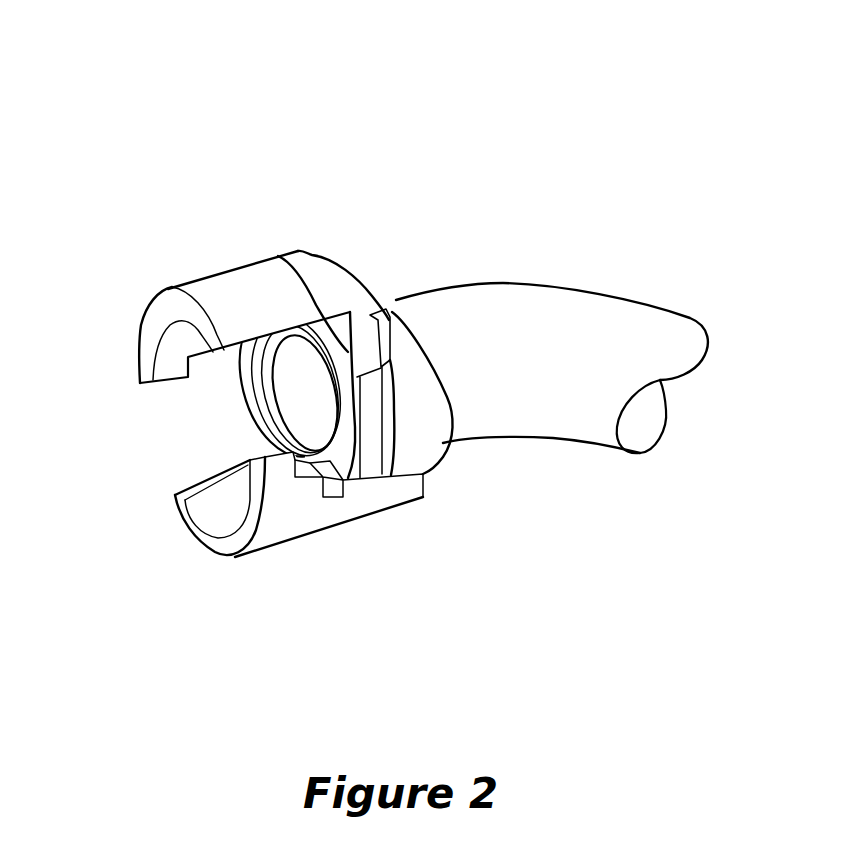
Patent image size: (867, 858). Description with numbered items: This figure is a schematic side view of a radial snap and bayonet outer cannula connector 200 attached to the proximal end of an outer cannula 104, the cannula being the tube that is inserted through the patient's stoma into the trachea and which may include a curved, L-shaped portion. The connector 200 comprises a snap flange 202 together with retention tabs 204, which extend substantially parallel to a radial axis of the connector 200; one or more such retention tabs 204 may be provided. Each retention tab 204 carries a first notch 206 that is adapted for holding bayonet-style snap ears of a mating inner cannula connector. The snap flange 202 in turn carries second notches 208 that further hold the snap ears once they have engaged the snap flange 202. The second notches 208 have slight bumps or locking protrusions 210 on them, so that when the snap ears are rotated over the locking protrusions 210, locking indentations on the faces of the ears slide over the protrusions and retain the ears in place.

The radial snap and bayonet outer cannula connector 200 is at (382, 166).
The snap flange 202 is at (357, 351).
The retention tabs 204 is at (187, 270).
The first notches 206 is at (343, 479).
The second notches 208 is at (378, 431).
The locking protrusions 210 is at (386, 397).
The outer cannula 104 is at (615, 293).